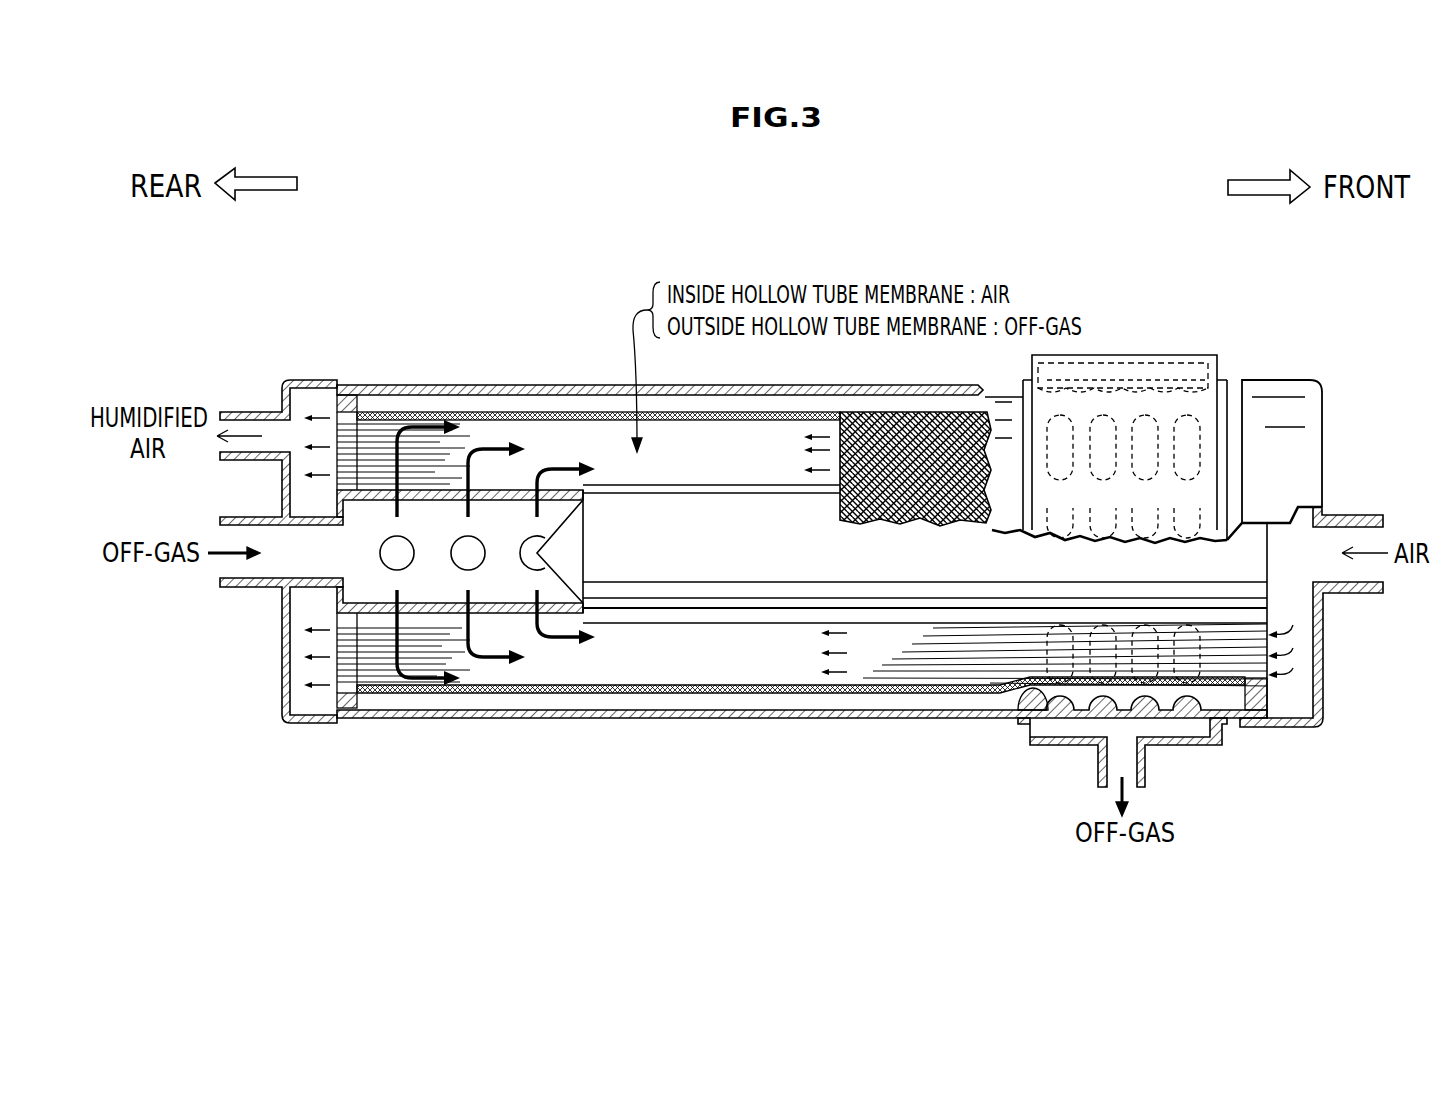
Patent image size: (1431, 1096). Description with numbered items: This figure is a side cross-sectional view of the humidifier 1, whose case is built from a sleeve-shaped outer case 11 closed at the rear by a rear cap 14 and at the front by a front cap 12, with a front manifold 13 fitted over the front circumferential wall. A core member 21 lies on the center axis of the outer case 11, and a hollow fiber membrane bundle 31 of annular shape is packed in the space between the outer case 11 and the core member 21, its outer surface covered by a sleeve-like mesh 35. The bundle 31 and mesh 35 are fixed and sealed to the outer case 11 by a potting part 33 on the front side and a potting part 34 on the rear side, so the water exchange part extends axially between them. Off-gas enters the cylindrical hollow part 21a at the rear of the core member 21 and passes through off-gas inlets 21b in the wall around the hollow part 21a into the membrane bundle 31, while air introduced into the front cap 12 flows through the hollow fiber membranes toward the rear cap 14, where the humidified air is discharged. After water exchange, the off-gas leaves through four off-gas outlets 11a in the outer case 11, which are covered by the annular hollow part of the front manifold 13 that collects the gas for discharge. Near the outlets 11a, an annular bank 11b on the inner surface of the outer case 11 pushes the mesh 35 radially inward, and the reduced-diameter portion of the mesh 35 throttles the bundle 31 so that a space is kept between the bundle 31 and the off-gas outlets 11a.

The humidifier 1 is at (791, 233).
The outer case 11 is at (448, 387).
The off-gas outlets 11a is at (1187, 413).
The annular bank 11b is at (1012, 698).
The front cap 12 is at (1272, 392).
The front manifold 13 is at (1196, 746).
The rear cap 14 is at (277, 688).
The core member 21 is at (743, 608).
The cylindrical hollow part 21a is at (358, 588).
The off-gas inlets 21b is at (478, 570).
The hollow fiber membrane bundle 31 is at (376, 425).
The potting part 33 is at (1270, 698).
The potting part 34 is at (333, 407).
The mesh 35 is at (873, 698).